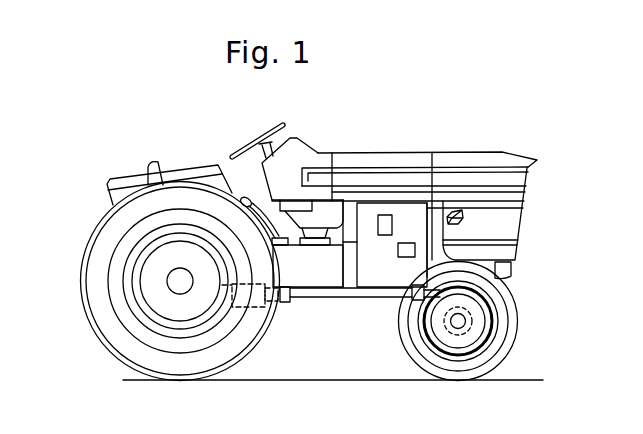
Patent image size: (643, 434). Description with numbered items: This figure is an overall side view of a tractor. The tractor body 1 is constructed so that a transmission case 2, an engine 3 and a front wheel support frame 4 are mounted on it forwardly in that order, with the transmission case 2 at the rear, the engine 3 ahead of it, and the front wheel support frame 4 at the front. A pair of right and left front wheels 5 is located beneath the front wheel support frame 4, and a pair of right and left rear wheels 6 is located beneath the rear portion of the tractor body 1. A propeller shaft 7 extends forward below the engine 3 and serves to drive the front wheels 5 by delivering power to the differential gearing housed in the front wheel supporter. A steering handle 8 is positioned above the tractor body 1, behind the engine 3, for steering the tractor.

The tractor body 1 is at (480, 147).
The transmission case 2 is at (313, 275).
The engine 3 is at (382, 273).
The front wheel support frame 4 is at (512, 268).
The front wheels 5 is at (463, 355).
The rear wheels 6 is at (185, 360).
The propeller shaft 7 is at (352, 297).
The steering handle 8 is at (283, 125).